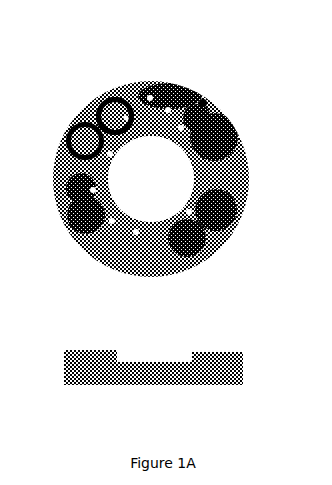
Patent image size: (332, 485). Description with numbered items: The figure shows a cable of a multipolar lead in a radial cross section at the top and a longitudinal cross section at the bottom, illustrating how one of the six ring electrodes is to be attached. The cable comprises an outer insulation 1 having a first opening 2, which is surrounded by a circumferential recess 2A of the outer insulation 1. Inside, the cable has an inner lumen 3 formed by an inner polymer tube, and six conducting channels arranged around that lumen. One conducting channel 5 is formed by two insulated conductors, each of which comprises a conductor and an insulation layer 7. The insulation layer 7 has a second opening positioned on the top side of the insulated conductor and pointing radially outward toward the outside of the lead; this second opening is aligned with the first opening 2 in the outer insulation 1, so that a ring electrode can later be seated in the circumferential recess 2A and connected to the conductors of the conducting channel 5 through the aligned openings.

The outer insulation 1 is at (83, 107).
The first opening 2 is at (200, 103).
The circumferential recess 2A is at (228, 353).
The inner lumen 3 is at (135, 172).
The conducting channel 5 is at (205, 102).
The insulation layer 7 is at (203, 102).